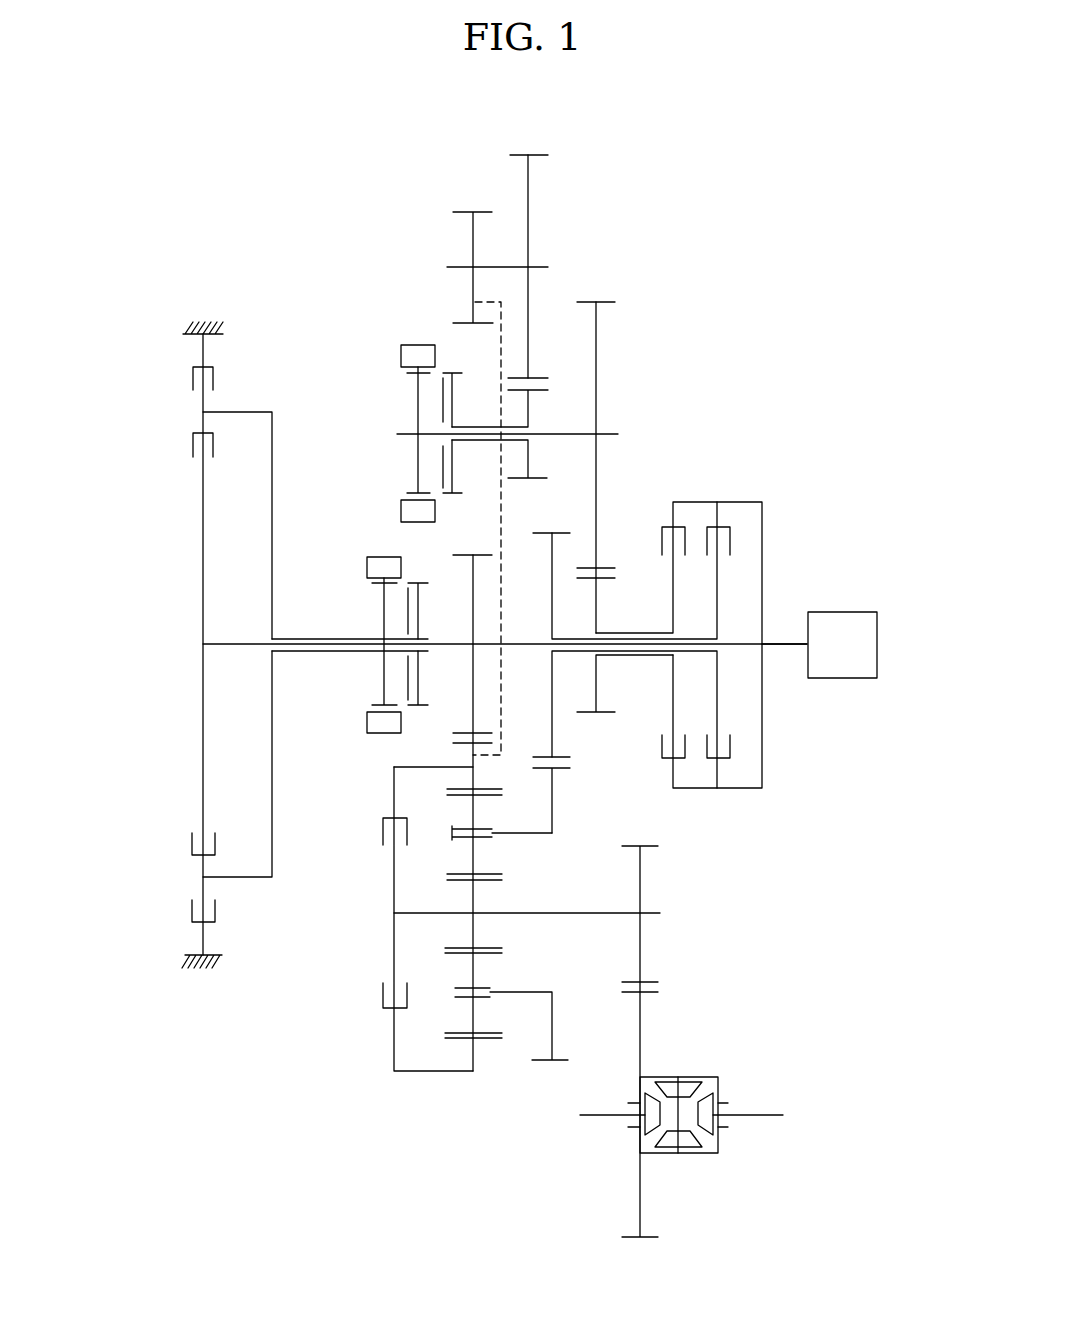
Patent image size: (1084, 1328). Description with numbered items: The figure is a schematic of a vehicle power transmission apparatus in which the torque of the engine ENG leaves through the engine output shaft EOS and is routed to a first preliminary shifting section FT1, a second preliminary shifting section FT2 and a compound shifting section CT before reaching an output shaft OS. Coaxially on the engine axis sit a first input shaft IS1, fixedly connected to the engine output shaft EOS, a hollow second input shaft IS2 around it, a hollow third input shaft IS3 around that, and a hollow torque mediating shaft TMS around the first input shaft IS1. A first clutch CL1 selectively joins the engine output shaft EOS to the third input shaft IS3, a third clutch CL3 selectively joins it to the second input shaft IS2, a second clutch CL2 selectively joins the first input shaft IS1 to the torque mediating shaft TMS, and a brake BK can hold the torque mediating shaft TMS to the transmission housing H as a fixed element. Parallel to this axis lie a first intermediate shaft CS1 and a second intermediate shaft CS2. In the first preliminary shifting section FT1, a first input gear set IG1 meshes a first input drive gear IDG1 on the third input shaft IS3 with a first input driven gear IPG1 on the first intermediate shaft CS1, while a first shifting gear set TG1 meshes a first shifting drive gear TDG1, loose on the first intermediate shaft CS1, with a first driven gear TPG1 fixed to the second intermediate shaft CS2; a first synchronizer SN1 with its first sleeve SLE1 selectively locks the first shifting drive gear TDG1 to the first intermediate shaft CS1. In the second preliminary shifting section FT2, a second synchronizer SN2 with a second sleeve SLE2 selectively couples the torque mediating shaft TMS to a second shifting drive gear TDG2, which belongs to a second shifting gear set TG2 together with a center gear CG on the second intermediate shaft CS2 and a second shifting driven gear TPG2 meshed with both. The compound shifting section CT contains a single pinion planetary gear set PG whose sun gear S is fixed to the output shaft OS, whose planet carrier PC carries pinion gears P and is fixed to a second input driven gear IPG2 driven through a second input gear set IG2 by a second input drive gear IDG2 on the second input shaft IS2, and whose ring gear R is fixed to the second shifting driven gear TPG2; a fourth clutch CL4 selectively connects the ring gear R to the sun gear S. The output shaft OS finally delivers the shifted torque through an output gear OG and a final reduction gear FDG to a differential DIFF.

The first shifting gear set TG1 is at (550, 146).
The first driven gear TPG1 is at (530, 191).
The center gear CG is at (473, 238).
The second intermediate shaft CS2 is at (503, 266).
The first input gear set IG1 is at (612, 285).
The first input driven gear IPG1 is at (598, 344).
The first shifting drive gear TDG1 is at (528, 411).
The first preliminary shifting section FT1 is at (677, 235).
The first intermediate shaft CS1 is at (568, 437).
The first input drive gear IDG1 is at (597, 607).
The first synchronizer SN1 is at (393, 335).
The first sleeve SLE1 is at (418, 347).
The second shifting gear set TG2 is at (470, 540).
The second shifting drive gear TDG2 is at (473, 610).
The second shifting driven gear TPG2 is at (473, 750).
The second synchronizer SN2 is at (360, 751).
The second sleeve SLE2 is at (374, 560).
The second input drive gear IDG2 is at (552, 580).
The first input shaft IS1 is at (548, 639).
The second input shaft IS2 is at (650, 655).
The third input shaft IS3 is at (650, 633).
The first clutch CL1 is at (688, 512).
The second clutch CL2 is at (178, 440).
The third clutch CL3 is at (737, 512).
The fourth clutch CL4 is at (372, 1005).
The engine ENG is at (842, 645).
The engine output shaft EOS is at (785, 650).
The torque mediating shaft TMS is at (313, 651).
The transmission housing H is at (200, 322).
The brake BK is at (178, 370).
The second preliminary shifting section FT2 is at (380, 916).
The second input driven gear IPG2 is at (556, 784).
The second input gear set IG2 is at (570, 806).
The ring gear R is at (455, 787).
The planet carrier PC is at (530, 838).
The pinion gears P is at (472, 857).
The sun gear S is at (472, 895).
The planetary gear set PG is at (440, 1046).
The compound shifting section CT is at (568, 1137).
The output shaft OS is at (578, 915).
The output gear OG is at (642, 947).
The final reduction gear FDG is at (642, 1025).
The differential DIFF is at (742, 1076).